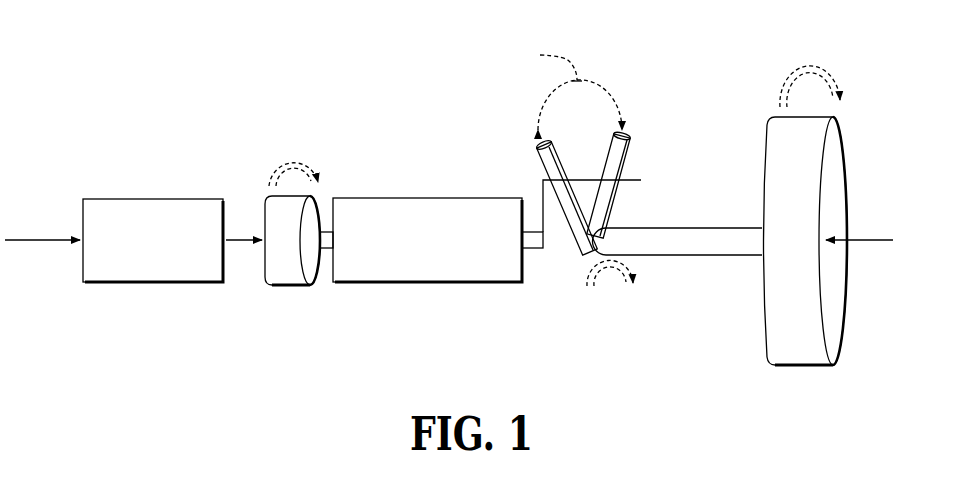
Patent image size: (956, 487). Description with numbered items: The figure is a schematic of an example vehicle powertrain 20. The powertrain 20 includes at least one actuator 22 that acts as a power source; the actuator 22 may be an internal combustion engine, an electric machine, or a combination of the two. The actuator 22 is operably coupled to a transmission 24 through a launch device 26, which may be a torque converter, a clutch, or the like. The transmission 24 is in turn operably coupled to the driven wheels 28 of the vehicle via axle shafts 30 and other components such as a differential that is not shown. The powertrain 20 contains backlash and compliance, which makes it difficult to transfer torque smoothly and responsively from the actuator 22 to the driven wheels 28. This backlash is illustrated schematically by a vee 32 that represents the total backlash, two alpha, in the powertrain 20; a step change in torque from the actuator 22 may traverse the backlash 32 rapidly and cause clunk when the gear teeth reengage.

The vehicle powertrain 20 is at (668, 55).
The actuator 22 is at (152, 199).
The transmission 24 is at (427, 198).
The launch device 26 is at (266, 275).
The driven wheels 28 is at (845, 163).
The axle shafts 30 is at (652, 228).
The vee 32 is at (560, 110).